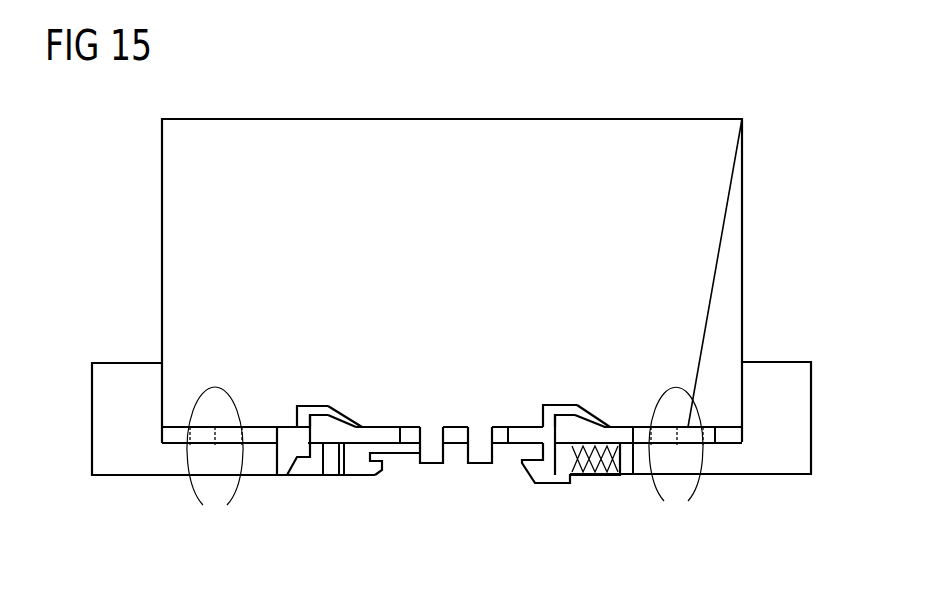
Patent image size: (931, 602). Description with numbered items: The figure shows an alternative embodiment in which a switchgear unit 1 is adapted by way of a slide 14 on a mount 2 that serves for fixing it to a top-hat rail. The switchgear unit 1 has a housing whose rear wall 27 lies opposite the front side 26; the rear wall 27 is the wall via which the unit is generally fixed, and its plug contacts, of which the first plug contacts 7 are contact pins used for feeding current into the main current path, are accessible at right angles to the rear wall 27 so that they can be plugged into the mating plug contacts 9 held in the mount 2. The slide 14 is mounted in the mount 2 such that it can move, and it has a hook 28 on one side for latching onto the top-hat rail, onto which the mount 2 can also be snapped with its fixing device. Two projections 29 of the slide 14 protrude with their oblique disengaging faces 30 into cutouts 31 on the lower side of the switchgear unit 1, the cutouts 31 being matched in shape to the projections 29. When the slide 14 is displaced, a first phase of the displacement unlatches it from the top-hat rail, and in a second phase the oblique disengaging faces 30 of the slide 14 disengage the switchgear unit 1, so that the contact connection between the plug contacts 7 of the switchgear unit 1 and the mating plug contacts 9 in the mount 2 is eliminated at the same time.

The switchgear unit 1 is at (278, 137).
The mount 2 is at (108, 421).
The first plug contacts 7 is at (215, 447).
The mating plug contacts 9 is at (216, 428).
The slide 14 is at (305, 470).
The front side 26 is at (526, 482).
The rear wall 27 is at (325, 420).
The hook 28 is at (355, 420).
The projections 29 is at (297, 420).
The oblique disengaging faces 30 is at (360, 427).
The cutouts 31 is at (343, 417).